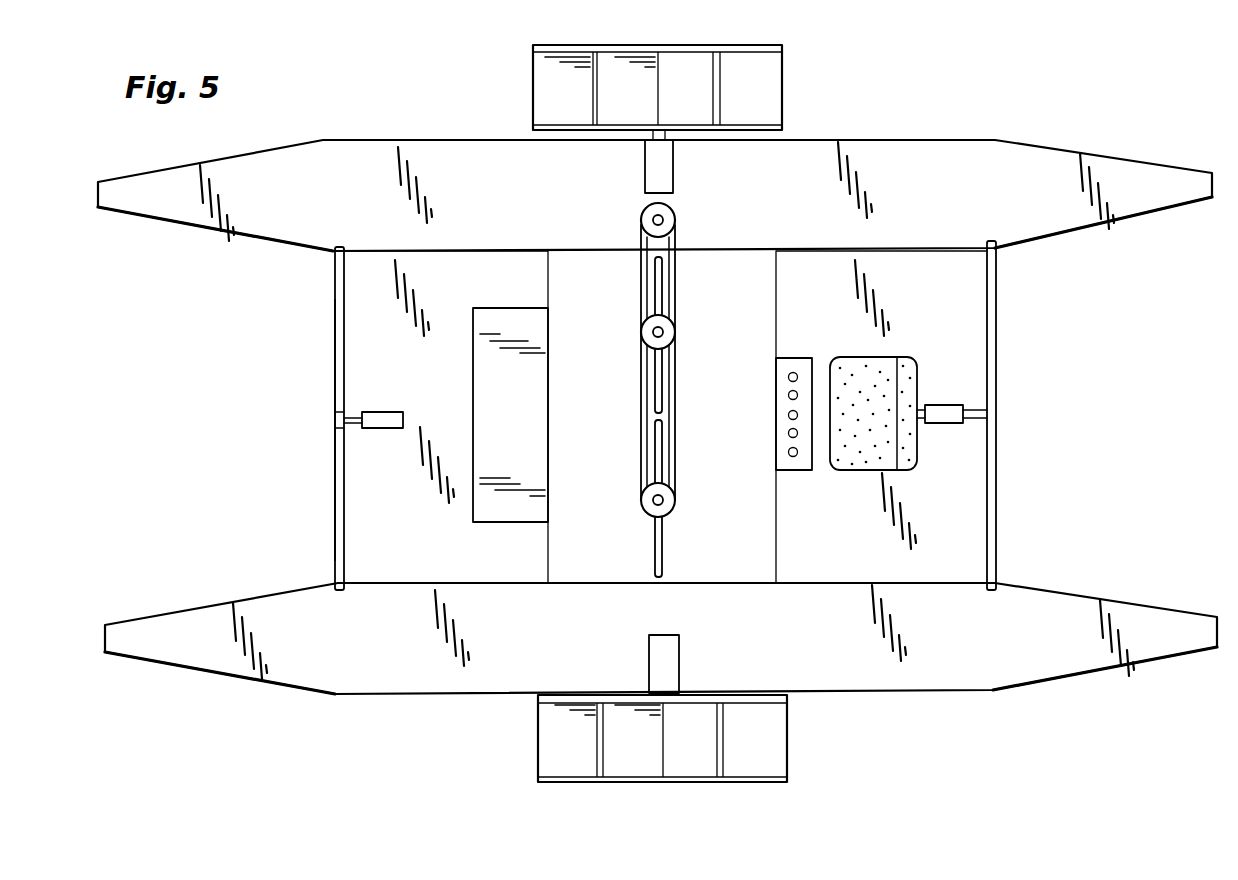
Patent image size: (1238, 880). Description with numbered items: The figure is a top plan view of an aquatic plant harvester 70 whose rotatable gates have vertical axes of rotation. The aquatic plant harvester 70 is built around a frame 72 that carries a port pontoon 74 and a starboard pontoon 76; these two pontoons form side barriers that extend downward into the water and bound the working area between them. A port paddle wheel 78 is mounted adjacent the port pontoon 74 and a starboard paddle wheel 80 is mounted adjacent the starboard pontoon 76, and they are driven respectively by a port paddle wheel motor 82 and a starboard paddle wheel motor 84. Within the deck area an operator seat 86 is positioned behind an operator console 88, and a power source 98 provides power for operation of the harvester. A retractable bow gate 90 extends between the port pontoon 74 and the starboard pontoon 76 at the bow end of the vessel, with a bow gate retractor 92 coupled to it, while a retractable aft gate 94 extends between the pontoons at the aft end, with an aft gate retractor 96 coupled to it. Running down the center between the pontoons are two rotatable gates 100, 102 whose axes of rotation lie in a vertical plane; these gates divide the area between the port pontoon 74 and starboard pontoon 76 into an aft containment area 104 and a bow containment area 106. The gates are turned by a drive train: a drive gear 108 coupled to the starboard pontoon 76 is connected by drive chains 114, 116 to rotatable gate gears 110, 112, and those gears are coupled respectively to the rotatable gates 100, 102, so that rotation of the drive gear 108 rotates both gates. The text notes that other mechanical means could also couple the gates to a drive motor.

The aquatic plant harvester 70 is at (1053, 92).
The frame 72 is at (333, 478).
The port pontoon 74 is at (237, 680).
The starboard pontoon 76 is at (286, 254).
The port paddle wheel 78 is at (773, 745).
The starboard paddle wheel 80 is at (782, 60).
The port paddle wheel motor 82 is at (672, 658).
The starboard paddle wheel motor 84 is at (660, 168).
The operator seat 86 is at (912, 370).
The operator console 88 is at (795, 470).
The retractable bow gate 90 is at (335, 360).
The bow gate retractor 92 is at (390, 412).
The retractable aft gate 94 is at (997, 297).
The aft gate retractor 96 is at (943, 423).
The power source 98 is at (530, 429).
The rotatable gate 100 is at (662, 380).
The rotatable gate 102 is at (662, 456).
The aft containment area 104 is at (928, 264).
The bow containment area 106 is at (462, 266).
The drive gear 108 is at (676, 222).
The rotatable gate gear 110 is at (676, 332).
The rotatable gate gear 112 is at (676, 501).
The drive chain 114 is at (640, 280).
The drive chain 116 is at (645, 422).